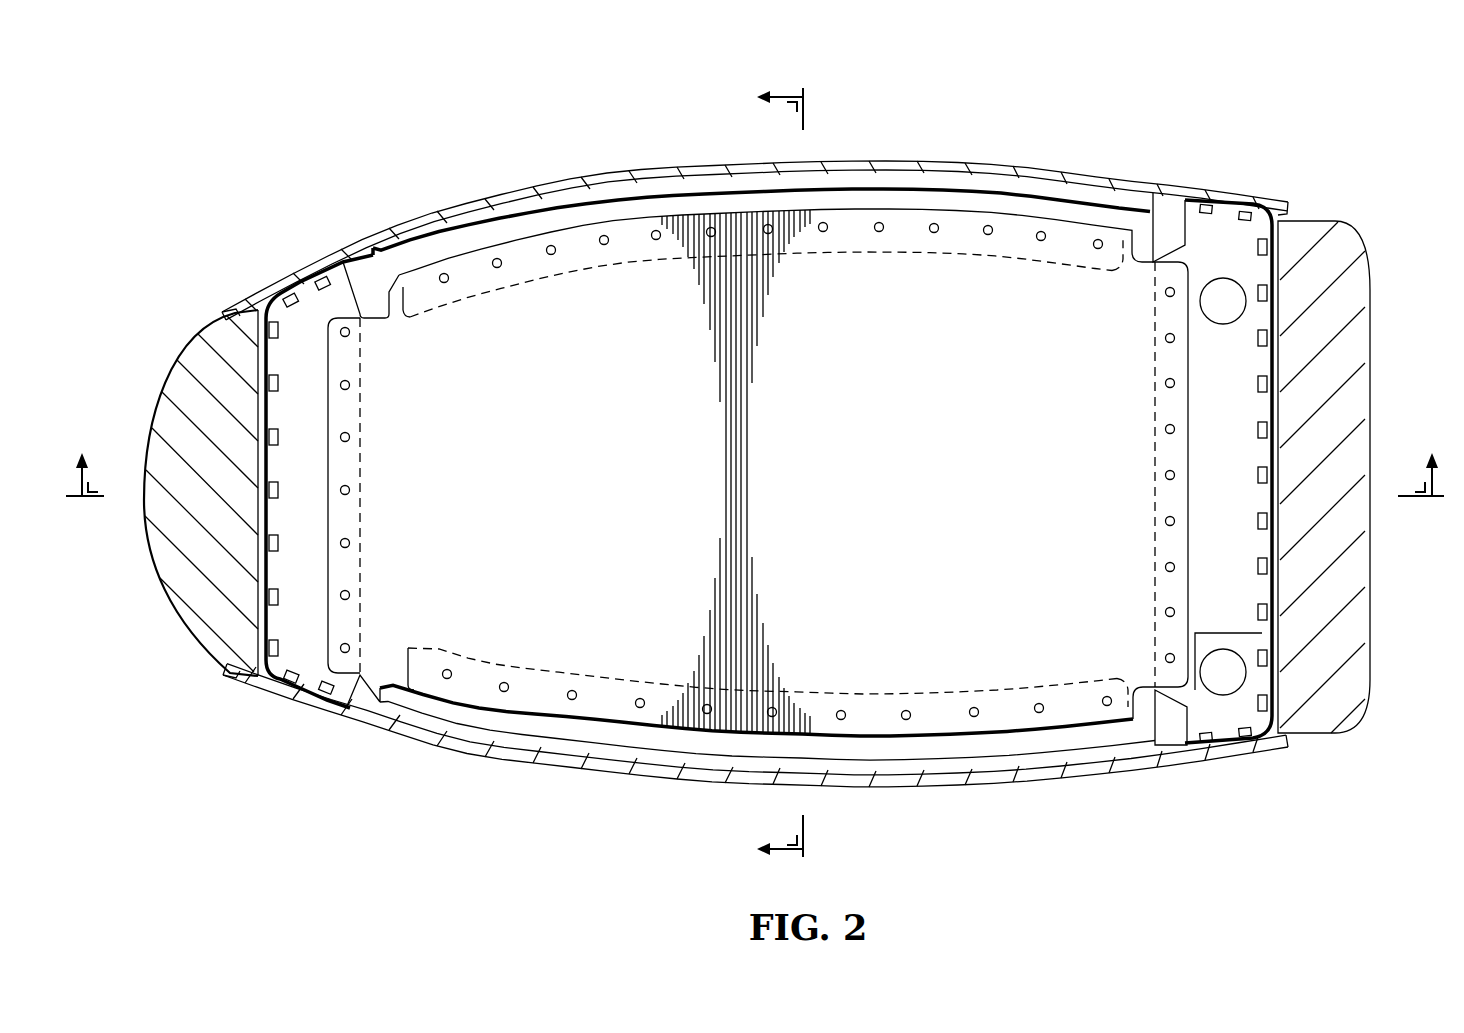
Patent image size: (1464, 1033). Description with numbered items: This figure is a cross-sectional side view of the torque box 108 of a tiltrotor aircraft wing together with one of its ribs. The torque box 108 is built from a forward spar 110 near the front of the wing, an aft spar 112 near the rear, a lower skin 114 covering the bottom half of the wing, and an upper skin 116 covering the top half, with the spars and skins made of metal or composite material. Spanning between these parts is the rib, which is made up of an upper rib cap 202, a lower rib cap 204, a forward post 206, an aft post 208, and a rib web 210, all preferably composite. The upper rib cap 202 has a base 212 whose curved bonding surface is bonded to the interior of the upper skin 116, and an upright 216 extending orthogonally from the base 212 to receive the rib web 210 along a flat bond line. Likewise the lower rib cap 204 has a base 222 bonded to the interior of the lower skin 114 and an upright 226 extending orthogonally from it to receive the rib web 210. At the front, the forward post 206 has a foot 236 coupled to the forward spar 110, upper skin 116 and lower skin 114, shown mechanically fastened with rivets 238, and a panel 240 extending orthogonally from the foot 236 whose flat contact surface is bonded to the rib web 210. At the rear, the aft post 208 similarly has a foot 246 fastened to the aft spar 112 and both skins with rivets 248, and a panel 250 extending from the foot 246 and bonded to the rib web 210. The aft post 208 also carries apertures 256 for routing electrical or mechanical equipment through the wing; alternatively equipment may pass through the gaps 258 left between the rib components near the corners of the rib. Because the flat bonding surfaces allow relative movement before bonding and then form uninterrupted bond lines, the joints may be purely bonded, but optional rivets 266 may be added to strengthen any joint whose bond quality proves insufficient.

The torque box 108 is at (340, 100).
The forward spar 110 is at (157, 540).
The aft spar 112 is at (1340, 572).
The lower skin 114 is at (478, 758).
The upper skin 116 is at (470, 203).
The upper rib cap 202 is at (902, 176).
The lower rib cap 204 is at (882, 767).
The forward post 206 is at (312, 401).
The aft post 208 is at (1214, 538).
The rib web 210 is at (600, 648).
The base 212 is at (1062, 182).
The upright 216 is at (956, 205).
The base 222 is at (1090, 762).
The upright 226 is at (984, 748).
The foot 236 is at (266, 463).
The rivets 238 is at (318, 276).
The panel 240 is at (320, 527).
The foot 246 is at (1274, 357).
The rivets 248 is at (1244, 212).
The panel 250 is at (1210, 447).
The apertures 256 is at (1212, 318).
The gaps 258 is at (357, 267).
The rivets 266 is at (549, 261).